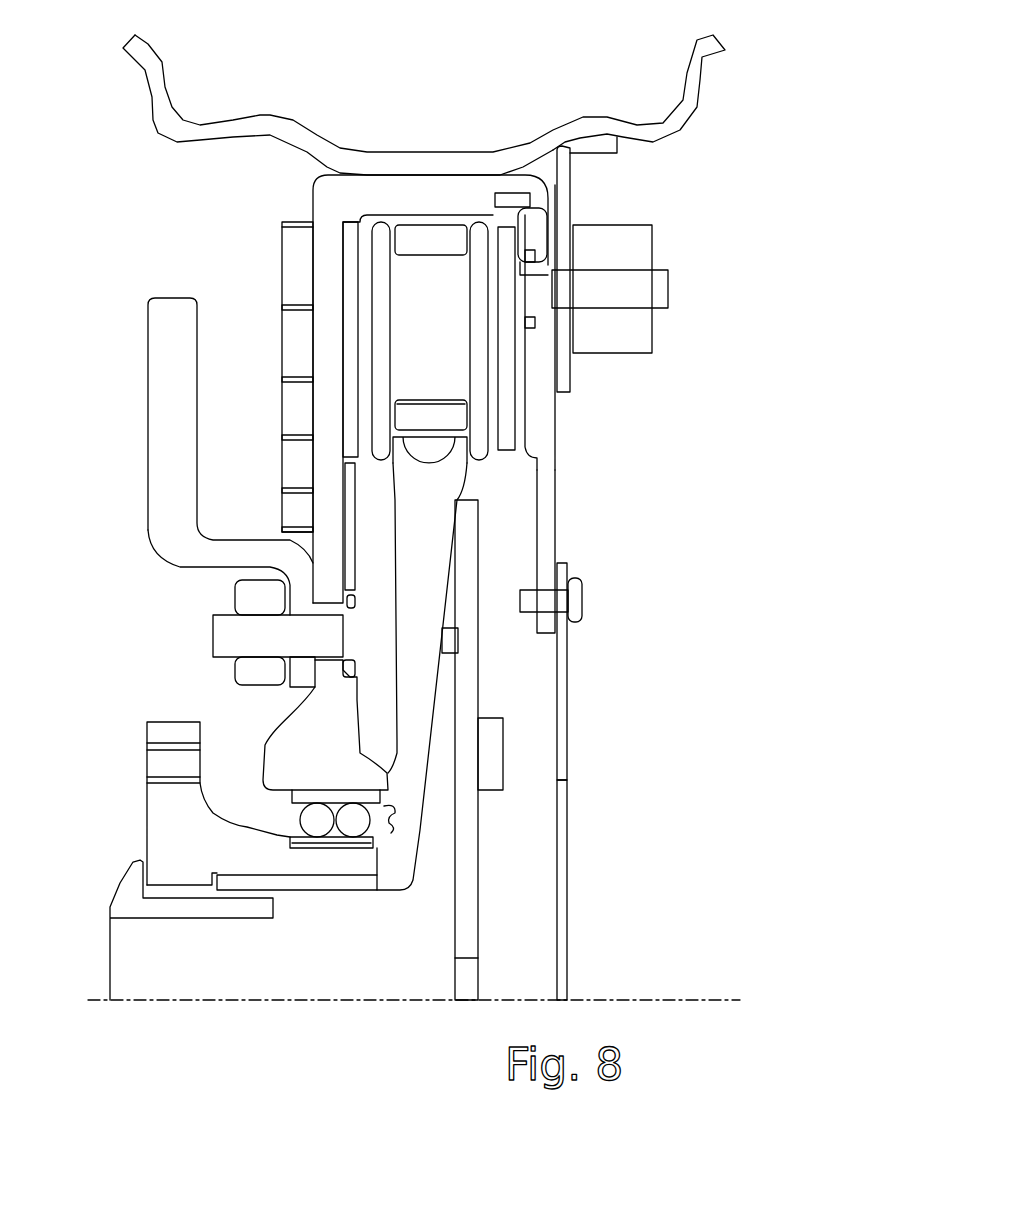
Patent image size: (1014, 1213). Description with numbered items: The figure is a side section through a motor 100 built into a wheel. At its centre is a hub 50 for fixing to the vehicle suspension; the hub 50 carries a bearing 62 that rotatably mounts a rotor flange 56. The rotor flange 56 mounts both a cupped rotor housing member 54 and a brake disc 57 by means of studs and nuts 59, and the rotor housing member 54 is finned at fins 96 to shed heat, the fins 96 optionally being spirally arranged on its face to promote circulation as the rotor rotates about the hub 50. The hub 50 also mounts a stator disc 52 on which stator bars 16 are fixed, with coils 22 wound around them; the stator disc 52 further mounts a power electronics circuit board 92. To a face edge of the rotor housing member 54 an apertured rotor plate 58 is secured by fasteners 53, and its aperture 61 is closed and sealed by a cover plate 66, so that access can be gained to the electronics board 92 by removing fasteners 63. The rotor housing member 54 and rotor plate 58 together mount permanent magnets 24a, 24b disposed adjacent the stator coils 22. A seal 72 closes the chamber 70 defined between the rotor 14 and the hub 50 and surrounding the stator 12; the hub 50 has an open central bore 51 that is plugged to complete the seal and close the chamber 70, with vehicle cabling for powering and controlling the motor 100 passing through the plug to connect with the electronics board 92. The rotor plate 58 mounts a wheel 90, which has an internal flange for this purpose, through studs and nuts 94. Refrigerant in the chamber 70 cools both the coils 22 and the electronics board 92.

The motor 100 is at (436, 517).
The rotor 14 is at (426, 380).
The stator 12 is at (460, 307).
The stator bars 16 is at (448, 341).
The coils 22 is at (447, 417).
The permanent magnet 24a is at (289, 377).
The permanent magnet 24b is at (508, 365).
The fins 96 is at (280, 373).
The rotor housing member 54 is at (337, 187).
The wheel 90 is at (602, 117).
The power electronics circuit board 92 is at (570, 183).
The fasteners 53 is at (535, 198).
The rotor plate 58 is at (538, 228).
The aperture 61 is at (543, 636).
The studs and nuts 94 is at (652, 241).
The cover plate 66 is at (567, 717).
The chamber 70 is at (542, 852).
The fasteners 63 is at (582, 597).
The stator disc 52 is at (423, 560).
The brake disc 57 is at (162, 465).
The studs and nuts 59 is at (223, 664).
The rotor flange 56 is at (348, 766).
The bearing 62 is at (290, 817).
The seal 72 is at (402, 820).
The hub 50 is at (158, 838).
The central bore 51 is at (200, 910).